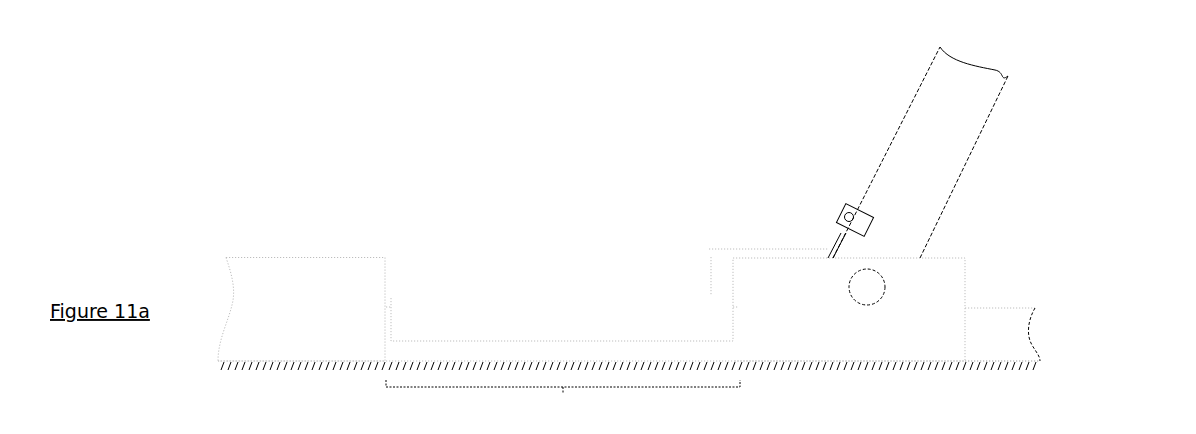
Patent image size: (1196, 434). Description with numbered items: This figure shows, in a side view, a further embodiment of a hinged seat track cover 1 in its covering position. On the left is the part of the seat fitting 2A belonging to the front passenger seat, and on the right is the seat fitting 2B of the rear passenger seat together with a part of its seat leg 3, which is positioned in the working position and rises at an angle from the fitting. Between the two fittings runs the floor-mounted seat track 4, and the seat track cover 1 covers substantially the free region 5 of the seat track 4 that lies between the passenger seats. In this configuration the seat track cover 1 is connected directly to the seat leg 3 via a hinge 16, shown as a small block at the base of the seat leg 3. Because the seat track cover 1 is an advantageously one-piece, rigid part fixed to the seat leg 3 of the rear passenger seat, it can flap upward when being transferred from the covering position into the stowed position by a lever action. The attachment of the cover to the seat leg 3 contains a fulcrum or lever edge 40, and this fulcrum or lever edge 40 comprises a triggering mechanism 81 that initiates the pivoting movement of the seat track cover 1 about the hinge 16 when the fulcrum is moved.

The seat track cover 1 is at (621, 290).
The seat fitting 2A is at (233, 259).
The seat fitting 2B is at (960, 258).
The seat leg 3 is at (1012, 77).
The seat track 4 is at (1076, 330).
The free region 5 is at (563, 405).
The hinge 16 is at (851, 190).
The fulcrum or lever edge 40 is at (814, 223).
The triggering mechanism 81 is at (824, 239).